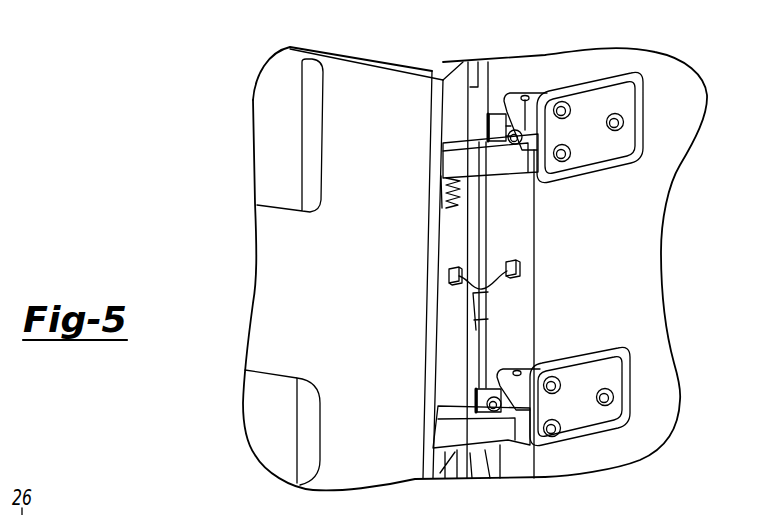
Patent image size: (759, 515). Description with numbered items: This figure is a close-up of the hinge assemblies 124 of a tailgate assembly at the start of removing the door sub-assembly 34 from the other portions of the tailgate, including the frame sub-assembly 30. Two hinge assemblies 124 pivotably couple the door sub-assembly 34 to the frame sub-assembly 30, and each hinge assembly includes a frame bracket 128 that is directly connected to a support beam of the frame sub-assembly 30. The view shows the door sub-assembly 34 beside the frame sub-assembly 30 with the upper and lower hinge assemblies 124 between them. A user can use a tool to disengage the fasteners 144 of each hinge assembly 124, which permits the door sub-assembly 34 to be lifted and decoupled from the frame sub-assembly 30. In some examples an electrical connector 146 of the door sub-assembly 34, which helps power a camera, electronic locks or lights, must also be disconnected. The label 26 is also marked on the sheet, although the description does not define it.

The door 26 is at (412, 62).
The frame sub-assembly 30 is at (298, 262).
The door sub-assembly 34 is at (622, 294).
The hinge assembly 124 is at (604, 139).
The frame bracket 128 is at (243, 0).
The fastener 144 is at (517, 145).
The electrical connector 146 is at (503, 285).